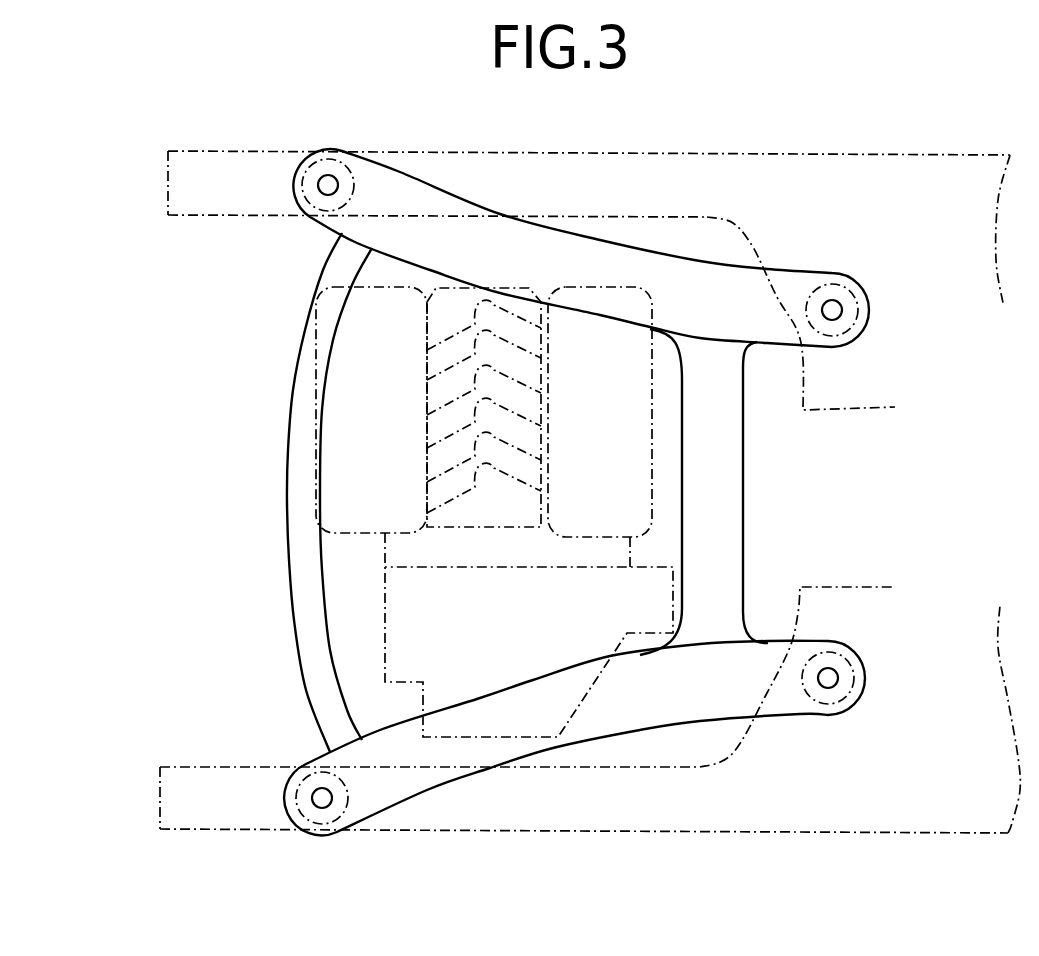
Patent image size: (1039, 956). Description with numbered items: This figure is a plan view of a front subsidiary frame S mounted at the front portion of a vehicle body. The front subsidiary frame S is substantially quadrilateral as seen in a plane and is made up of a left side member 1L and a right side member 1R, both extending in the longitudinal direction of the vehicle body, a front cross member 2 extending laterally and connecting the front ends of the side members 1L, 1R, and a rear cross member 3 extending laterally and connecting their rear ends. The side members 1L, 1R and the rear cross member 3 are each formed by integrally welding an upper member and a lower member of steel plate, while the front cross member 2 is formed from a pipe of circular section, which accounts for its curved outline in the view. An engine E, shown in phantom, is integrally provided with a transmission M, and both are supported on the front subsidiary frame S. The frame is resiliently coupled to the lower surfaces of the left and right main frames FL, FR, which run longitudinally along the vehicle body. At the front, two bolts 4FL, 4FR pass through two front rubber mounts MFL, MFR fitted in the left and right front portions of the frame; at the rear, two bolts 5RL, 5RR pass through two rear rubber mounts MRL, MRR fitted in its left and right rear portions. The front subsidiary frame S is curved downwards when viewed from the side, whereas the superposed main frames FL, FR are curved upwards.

The right side member 1R is at (583, 263).
The left side member 1L is at (632, 708).
The front cross member 2 is at (306, 628).
The rear cross member 3 is at (730, 527).
The bolt 4FR is at (320, 190).
The bolt 4FL is at (313, 797).
The bolt 5RR is at (840, 312).
The bolt 5RL is at (828, 677).
The front rubber mount MFR is at (353, 188).
The front rubber mount MFL is at (350, 803).
The rear rubber mount MRR is at (847, 287).
The rear rubber mount MRL is at (838, 715).
The right main frame FR is at (592, 152).
The left main frame FL is at (550, 828).
The front subsidiary frame S is at (722, 262).
The engine E is at (353, 393).
The transmission M is at (383, 602).